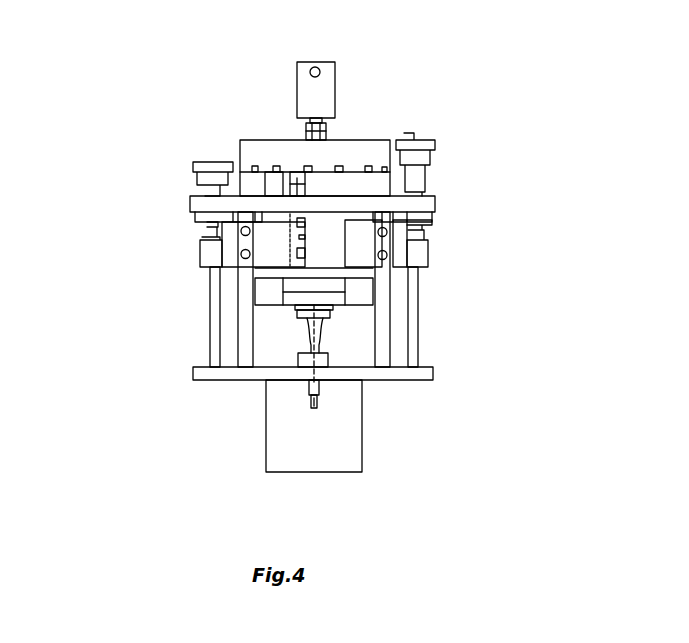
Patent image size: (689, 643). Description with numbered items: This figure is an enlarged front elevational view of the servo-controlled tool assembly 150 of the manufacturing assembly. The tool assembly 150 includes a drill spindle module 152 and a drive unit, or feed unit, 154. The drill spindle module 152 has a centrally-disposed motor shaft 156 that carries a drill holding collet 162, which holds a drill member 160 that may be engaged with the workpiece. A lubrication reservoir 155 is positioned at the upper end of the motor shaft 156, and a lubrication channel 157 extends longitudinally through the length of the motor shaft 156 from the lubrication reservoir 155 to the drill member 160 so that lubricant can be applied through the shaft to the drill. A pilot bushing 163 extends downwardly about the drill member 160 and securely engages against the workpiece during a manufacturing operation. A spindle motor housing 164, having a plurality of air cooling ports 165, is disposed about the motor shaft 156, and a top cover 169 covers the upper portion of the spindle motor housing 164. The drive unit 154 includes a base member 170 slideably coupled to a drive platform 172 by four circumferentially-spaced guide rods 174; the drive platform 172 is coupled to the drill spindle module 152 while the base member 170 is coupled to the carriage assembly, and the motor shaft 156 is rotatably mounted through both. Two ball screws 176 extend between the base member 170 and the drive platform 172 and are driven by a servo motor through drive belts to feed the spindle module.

The servo-controlled tool assembly 150 is at (468, 70).
The drill spindle module 152 is at (382, 476).
The drive unit 154 is at (132, 246).
The lubrication reservoir 155 is at (310, 96).
The motor shaft 156 is at (332, 62).
The lubrication channel 157 is at (328, 132).
The drill member 160 is at (315, 408).
The drill holding collet 162 is at (330, 354).
The pilot bushing 163 is at (266, 444).
The spindle motor housing 164 is at (392, 182).
The air cooling ports 165 is at (308, 166).
The top cover 169 is at (382, 150).
The base member 170 is at (433, 375).
The drive platform 172 is at (435, 205).
The guide rods 174 is at (238, 340).
The ball screws 176 is at (212, 280).